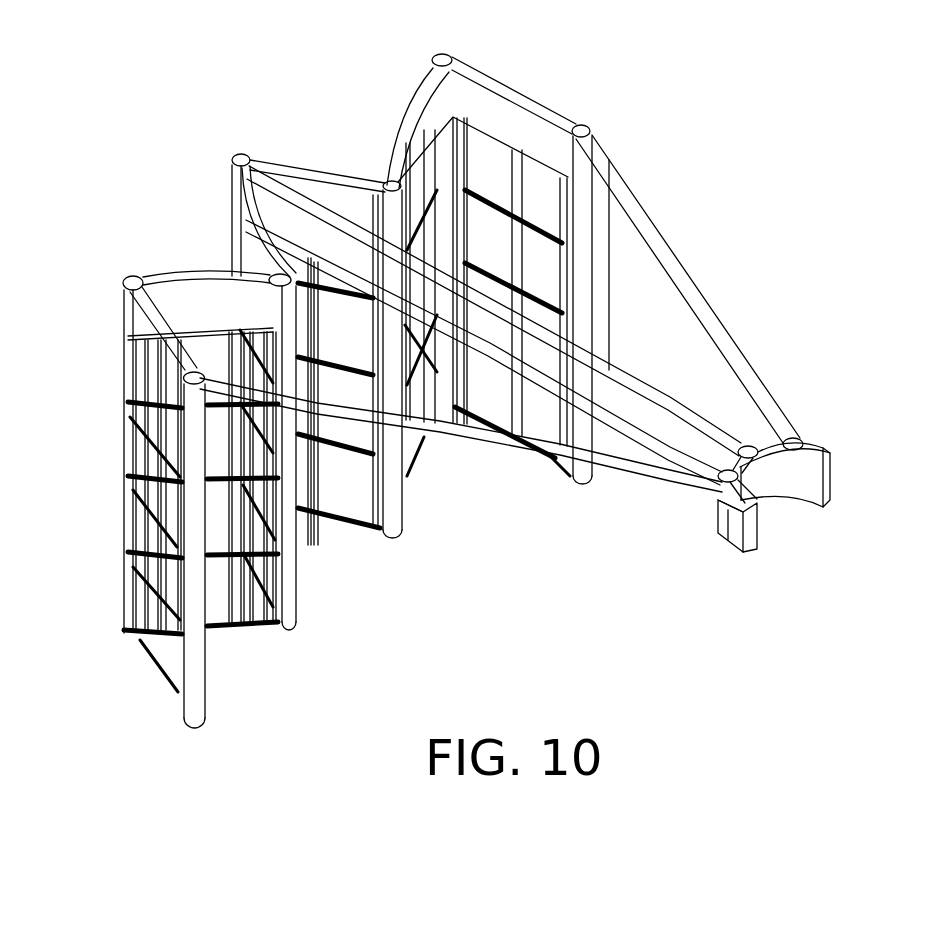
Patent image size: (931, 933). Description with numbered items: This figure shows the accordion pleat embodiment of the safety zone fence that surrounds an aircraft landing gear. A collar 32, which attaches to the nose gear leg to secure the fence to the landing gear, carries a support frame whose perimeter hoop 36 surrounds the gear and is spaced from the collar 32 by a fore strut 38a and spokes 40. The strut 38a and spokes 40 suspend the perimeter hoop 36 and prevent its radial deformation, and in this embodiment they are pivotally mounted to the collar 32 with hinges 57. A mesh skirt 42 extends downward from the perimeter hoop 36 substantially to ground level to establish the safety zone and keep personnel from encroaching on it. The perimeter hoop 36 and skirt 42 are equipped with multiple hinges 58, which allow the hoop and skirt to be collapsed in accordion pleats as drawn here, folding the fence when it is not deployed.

The hinges 58 is at (240, 153).
The perimeter hoop 36 is at (203, 277).
The mesh skirt 42 is at (150, 662).
The fore strut 38a is at (633, 382).
The spokes 40 is at (700, 297).
The hinges 57 is at (752, 445).
The collar 32 is at (787, 488).